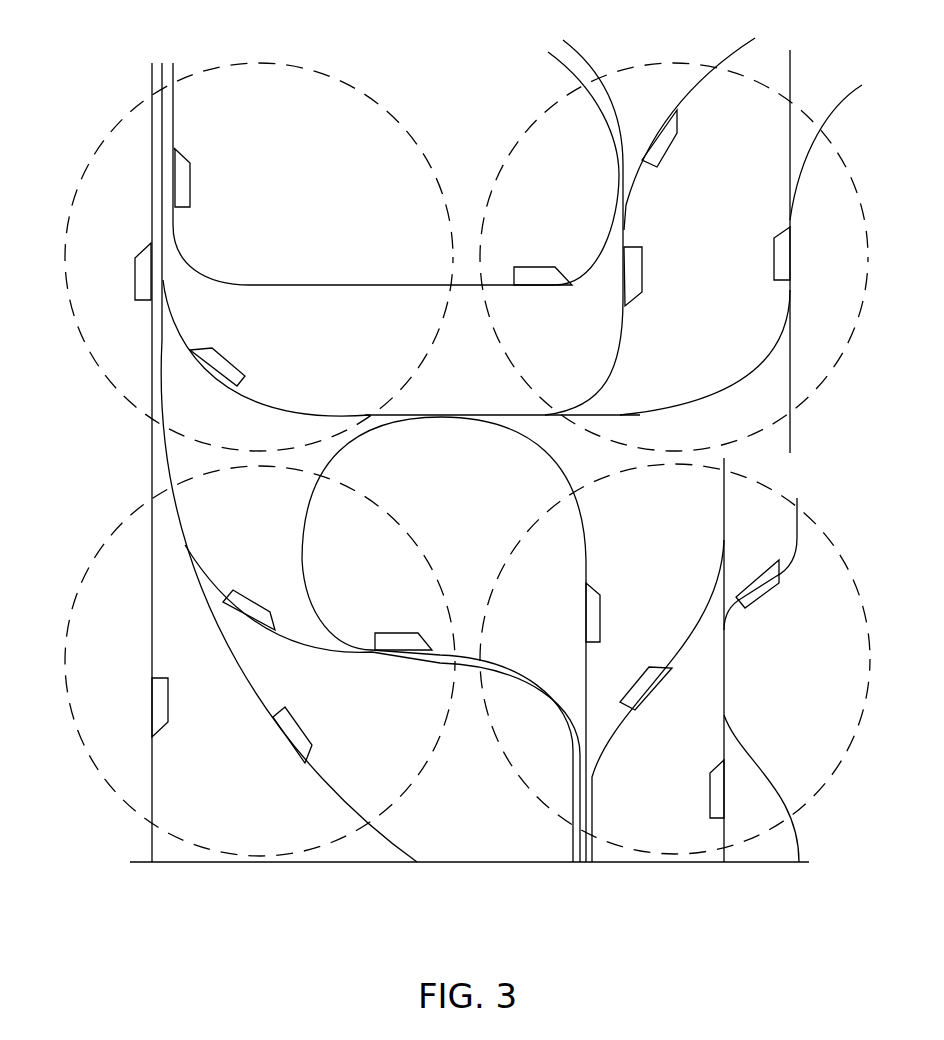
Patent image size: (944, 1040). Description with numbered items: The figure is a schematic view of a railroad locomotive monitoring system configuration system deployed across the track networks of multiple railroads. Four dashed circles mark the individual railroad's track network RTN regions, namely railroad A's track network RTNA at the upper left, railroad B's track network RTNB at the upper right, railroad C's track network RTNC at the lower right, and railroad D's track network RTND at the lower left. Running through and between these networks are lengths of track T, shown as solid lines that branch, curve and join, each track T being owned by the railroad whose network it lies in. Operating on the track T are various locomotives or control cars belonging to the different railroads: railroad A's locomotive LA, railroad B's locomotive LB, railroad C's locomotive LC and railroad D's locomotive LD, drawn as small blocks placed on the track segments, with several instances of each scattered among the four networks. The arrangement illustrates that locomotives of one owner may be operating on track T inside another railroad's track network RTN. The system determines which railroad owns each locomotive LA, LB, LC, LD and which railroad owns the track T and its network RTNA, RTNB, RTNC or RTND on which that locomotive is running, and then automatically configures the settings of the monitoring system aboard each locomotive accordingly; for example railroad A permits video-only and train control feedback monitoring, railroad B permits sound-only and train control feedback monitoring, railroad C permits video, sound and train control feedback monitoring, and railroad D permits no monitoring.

The track T is at (152, 193).
The railroad A's locomotive LA is at (277, 267).
The railroad B's locomotive LB is at (191, 183).
The railroad C's locomotive LC is at (134, 278).
The railroad D's locomotive LD is at (228, 360).
The railroad's track network RTN is at (117, 388).
The railroad A's track network RTNA is at (347, 86).
The railroad B's track network RTNB is at (548, 110).
The railroad C's track network RTNC is at (543, 806).
The railroad D's track network RTND is at (343, 834).